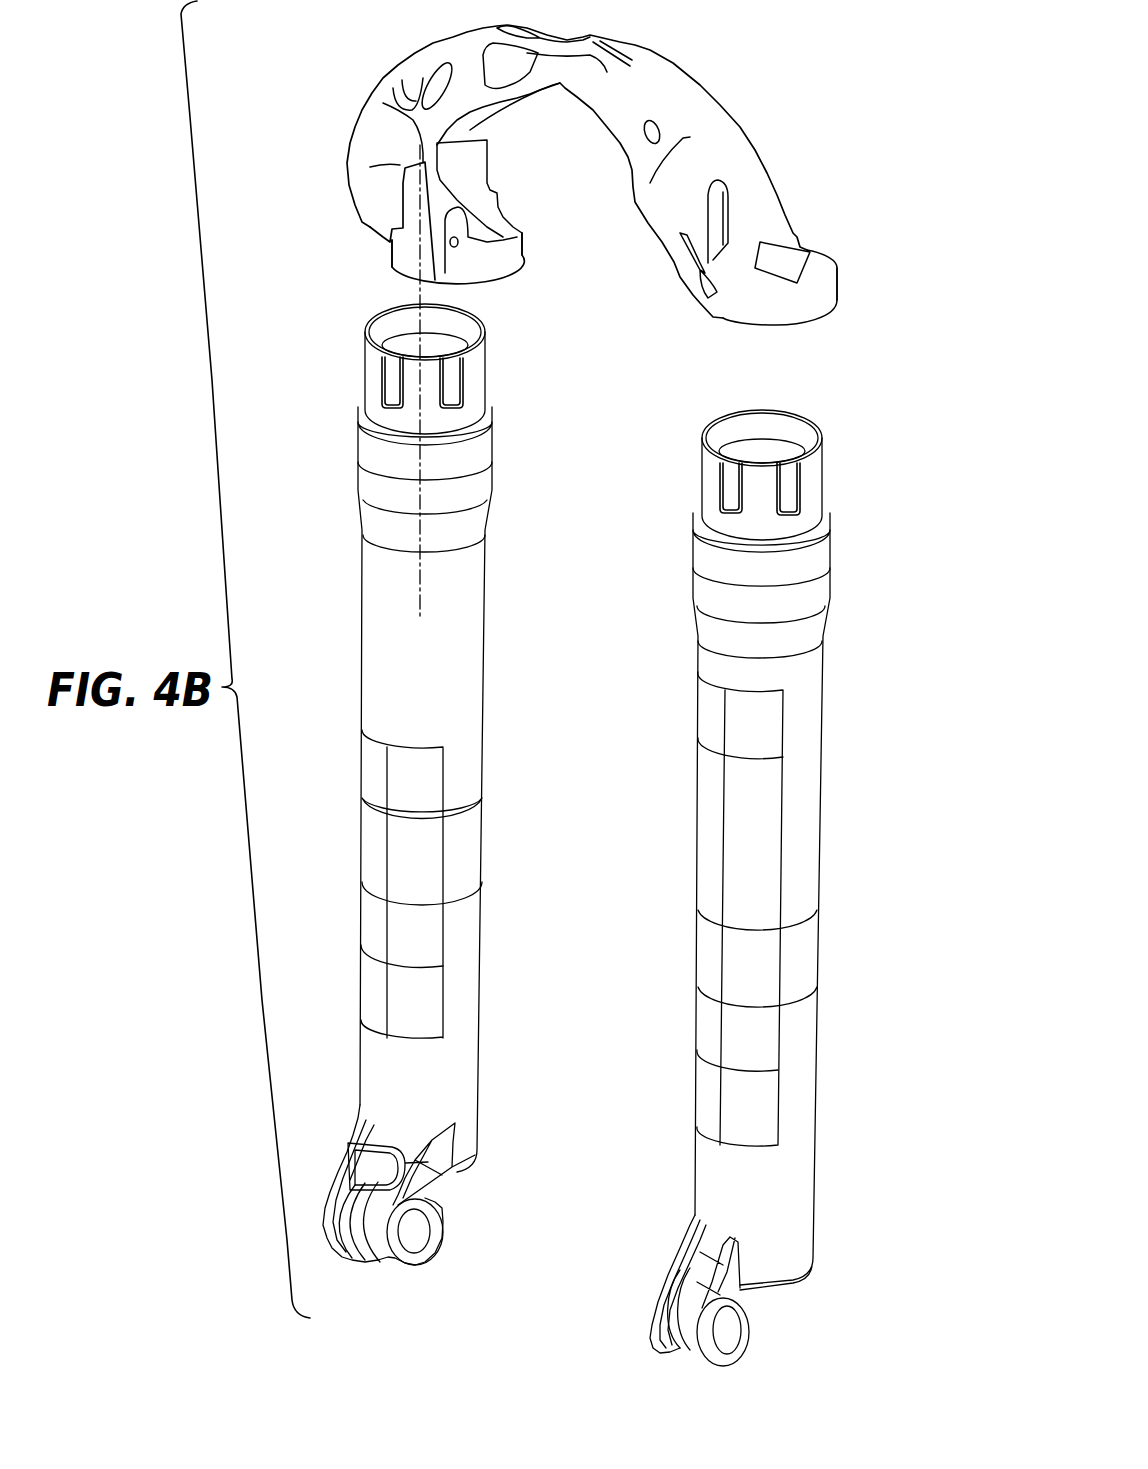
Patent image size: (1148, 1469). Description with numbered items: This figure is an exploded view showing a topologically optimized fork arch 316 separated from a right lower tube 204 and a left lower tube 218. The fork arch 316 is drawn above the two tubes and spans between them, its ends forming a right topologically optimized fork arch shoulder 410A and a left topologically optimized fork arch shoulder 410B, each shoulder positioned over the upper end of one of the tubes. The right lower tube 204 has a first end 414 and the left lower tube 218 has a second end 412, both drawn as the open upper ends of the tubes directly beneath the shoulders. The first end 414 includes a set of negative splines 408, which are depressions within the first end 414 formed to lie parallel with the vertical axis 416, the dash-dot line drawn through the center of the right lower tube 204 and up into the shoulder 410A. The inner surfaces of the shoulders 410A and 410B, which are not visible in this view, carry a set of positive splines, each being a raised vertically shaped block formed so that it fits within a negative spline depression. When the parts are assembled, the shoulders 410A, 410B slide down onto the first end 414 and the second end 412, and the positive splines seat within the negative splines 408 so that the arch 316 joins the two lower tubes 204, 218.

The topologically optimized fork arch 316 is at (682, 62).
The right topologically optimized fork arch shoulder 410A is at (347, 272).
The left topologically optimized fork arch shoulder 410B is at (846, 245).
The vertical axis 416 is at (417, 297).
The set of negative splines 408 is at (387, 372).
The first end 414 is at (347, 317).
The second end 412 is at (677, 425).
The right lower tube 204 is at (368, 702).
The left lower tube 218 is at (812, 1058).